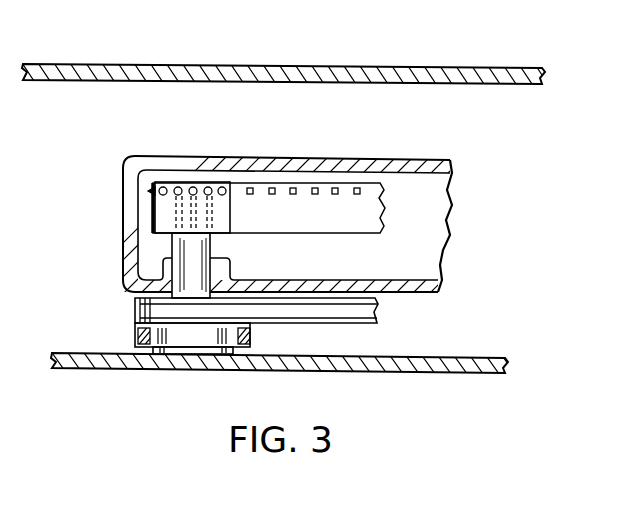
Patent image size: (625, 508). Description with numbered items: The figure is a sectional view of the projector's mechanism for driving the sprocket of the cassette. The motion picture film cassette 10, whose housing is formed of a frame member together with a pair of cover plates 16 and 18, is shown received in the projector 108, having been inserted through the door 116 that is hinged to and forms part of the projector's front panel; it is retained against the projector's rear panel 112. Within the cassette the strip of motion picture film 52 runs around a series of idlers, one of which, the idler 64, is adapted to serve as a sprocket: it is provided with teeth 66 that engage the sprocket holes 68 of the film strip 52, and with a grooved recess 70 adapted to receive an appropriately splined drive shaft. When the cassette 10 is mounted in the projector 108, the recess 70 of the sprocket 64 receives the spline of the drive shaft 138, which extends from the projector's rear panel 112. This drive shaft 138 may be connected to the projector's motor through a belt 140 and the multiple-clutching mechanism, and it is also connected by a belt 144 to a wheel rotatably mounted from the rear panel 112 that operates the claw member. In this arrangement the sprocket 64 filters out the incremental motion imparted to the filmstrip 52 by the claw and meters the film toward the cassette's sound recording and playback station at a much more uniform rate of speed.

The motion picture film cassette 10 is at (333, 227).
The cover plate 16 is at (405, 293).
The cover plate 18 is at (392, 160).
The strip of motion picture film 52 is at (312, 221).
The idler 64 is at (230, 265).
The teeth 66 is at (208, 182).
The sprocket holes 68 is at (332, 194).
The grooved recess 70 is at (210, 217).
The projector 108 is at (446, 68).
The rear panel 112 is at (468, 373).
The door 116 is at (370, 68).
The drive shaft 138 is at (226, 263).
The belt 140 is at (349, 320).
The belt 144 is at (140, 336).